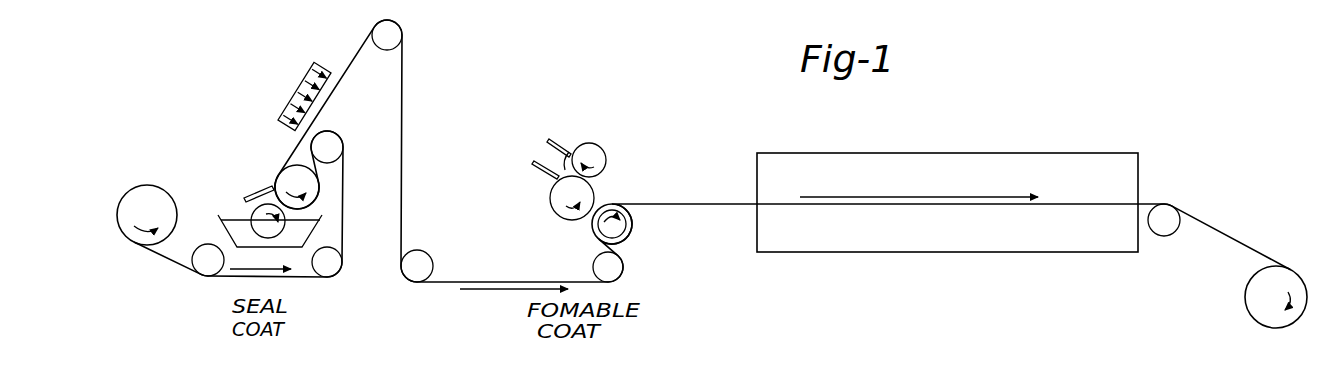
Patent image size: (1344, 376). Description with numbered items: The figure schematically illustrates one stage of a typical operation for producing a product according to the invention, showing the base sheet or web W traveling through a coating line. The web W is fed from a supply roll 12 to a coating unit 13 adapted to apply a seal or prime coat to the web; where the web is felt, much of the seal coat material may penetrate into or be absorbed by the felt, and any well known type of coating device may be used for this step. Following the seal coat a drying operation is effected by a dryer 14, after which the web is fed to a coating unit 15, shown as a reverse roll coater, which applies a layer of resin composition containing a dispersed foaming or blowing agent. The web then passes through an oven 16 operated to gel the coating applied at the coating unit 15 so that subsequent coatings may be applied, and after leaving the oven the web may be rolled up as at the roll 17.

The web W is at (174, 262).
The supply roll 12 is at (147, 192).
The coating unit 13 is at (263, 181).
The dryer 14 is at (294, 95).
The coating unit 15 is at (608, 191).
The oven 16 is at (967, 153).
The roll 17 is at (1258, 293).